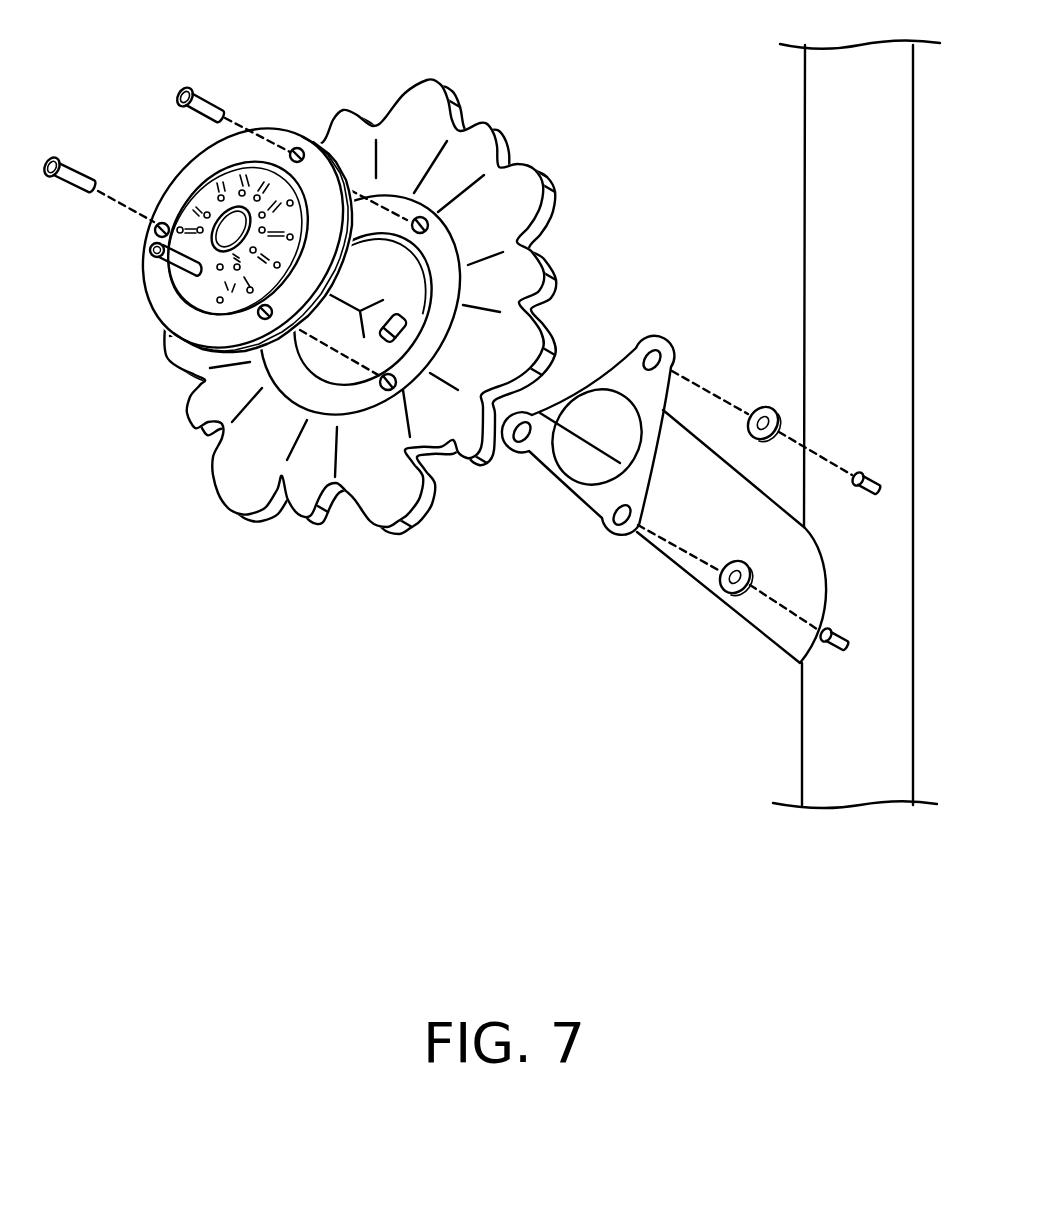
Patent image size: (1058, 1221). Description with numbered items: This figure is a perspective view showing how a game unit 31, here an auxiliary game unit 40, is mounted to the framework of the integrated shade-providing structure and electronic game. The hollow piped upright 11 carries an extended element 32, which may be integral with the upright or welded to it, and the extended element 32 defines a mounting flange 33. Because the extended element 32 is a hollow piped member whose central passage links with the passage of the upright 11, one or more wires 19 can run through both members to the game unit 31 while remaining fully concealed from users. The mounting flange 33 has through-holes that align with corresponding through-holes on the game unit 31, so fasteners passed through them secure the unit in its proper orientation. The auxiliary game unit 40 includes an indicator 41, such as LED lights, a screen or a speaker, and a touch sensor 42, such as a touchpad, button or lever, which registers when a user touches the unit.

The upright 11 is at (893, 218).
The wire 19 is at (597, 390).
The game unit 31 is at (491, 82).
The extended element 32 is at (685, 467).
The mounting flange 33 is at (565, 493).
The auxiliary game unit 40 is at (238, 472).
The indicator 41 is at (203, 180).
The touch sensor 42 is at (228, 242).